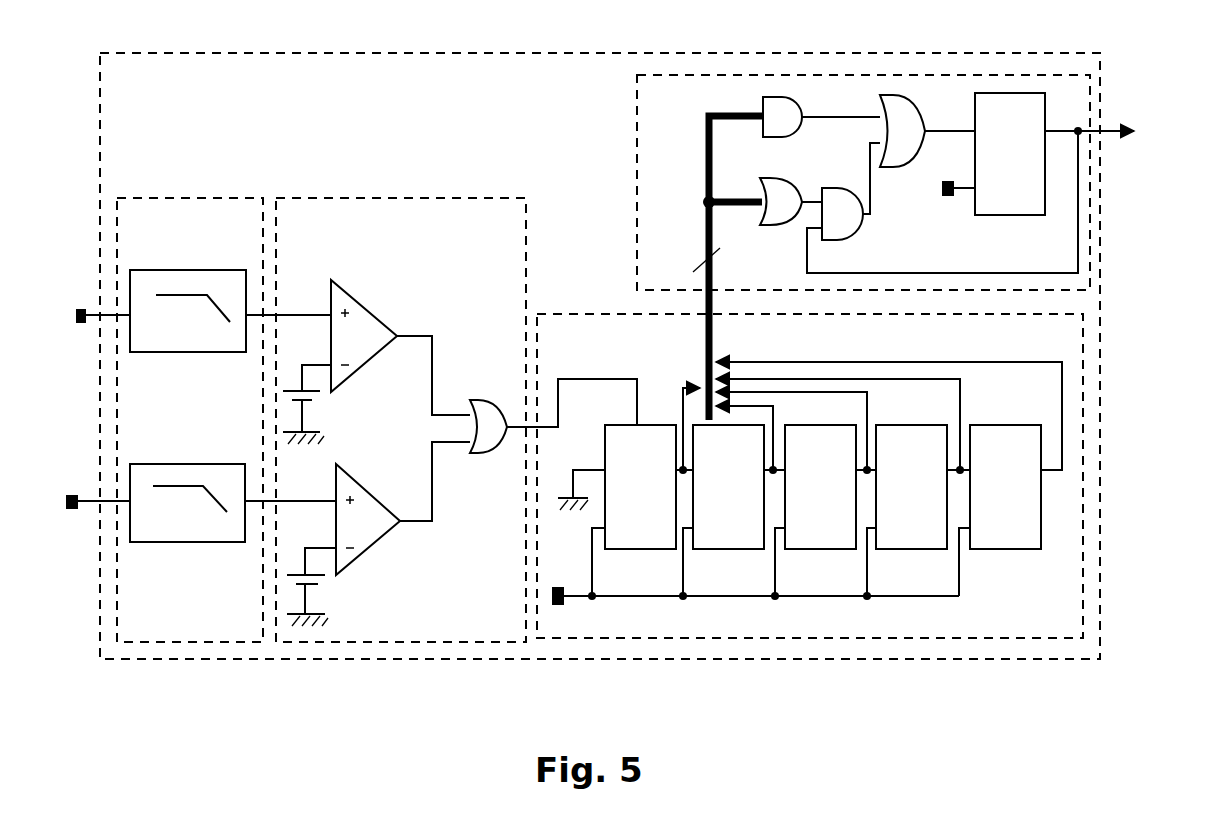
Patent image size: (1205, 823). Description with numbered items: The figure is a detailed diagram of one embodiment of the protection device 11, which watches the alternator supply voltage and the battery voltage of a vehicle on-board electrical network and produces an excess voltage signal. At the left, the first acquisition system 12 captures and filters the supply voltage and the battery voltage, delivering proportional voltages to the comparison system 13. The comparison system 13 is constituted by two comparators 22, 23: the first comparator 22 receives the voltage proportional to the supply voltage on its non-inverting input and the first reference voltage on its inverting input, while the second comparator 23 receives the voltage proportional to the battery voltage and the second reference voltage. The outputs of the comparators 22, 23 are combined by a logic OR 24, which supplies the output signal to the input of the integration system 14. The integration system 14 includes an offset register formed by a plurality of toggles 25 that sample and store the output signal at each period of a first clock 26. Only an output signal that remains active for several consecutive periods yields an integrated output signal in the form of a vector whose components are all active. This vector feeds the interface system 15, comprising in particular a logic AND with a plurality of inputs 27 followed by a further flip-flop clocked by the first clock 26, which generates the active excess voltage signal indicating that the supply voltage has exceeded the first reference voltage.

The protection device 11 is at (545, 50).
The first acquisition system 12 is at (188, 198).
The comparison system 13 is at (416, 195).
The integration system 14 is at (602, 311).
The interface system 15 is at (632, 152).
The comparator 22 is at (356, 296).
The comparator 23 is at (359, 481).
The logic OR 24 is at (500, 404).
The toggle D 25 is at (993, 551).
The first clock 26 is at (556, 605).
The logic AND with a plurality of inputs 27 is at (787, 137).